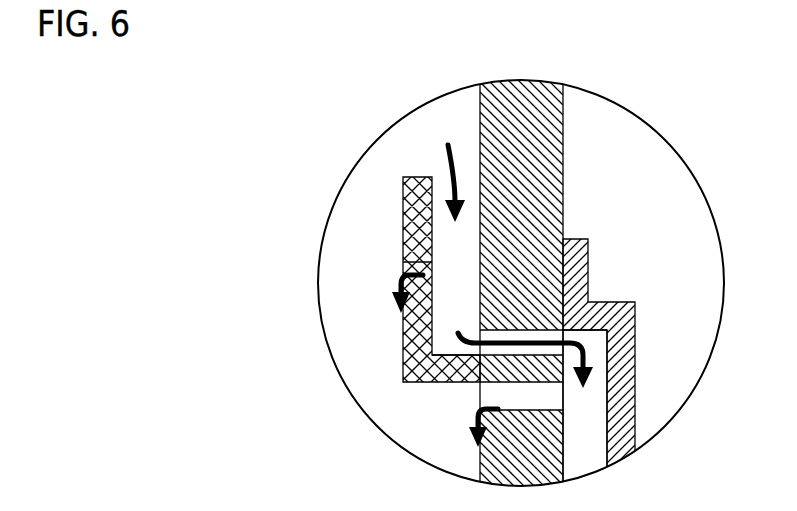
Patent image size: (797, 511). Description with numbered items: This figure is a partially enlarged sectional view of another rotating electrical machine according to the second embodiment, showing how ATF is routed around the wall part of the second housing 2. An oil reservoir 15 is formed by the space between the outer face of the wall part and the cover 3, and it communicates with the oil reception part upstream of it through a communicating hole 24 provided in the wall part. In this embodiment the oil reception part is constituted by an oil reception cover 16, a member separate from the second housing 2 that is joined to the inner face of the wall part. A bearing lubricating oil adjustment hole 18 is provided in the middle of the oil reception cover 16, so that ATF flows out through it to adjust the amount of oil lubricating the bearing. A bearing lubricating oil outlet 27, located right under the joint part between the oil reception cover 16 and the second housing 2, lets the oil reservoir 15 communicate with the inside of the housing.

The second housing 2 is at (563, 140).
The cover 3 is at (640, 437).
The oil reservoir 15 is at (590, 405).
The oil reception cover 16 is at (403, 221).
The bearing lubricating oil adjustment hole 18 is at (413, 264).
The communicating hole 24 is at (550, 336).
The bearing lubricating oil outlet 27 is at (492, 397).